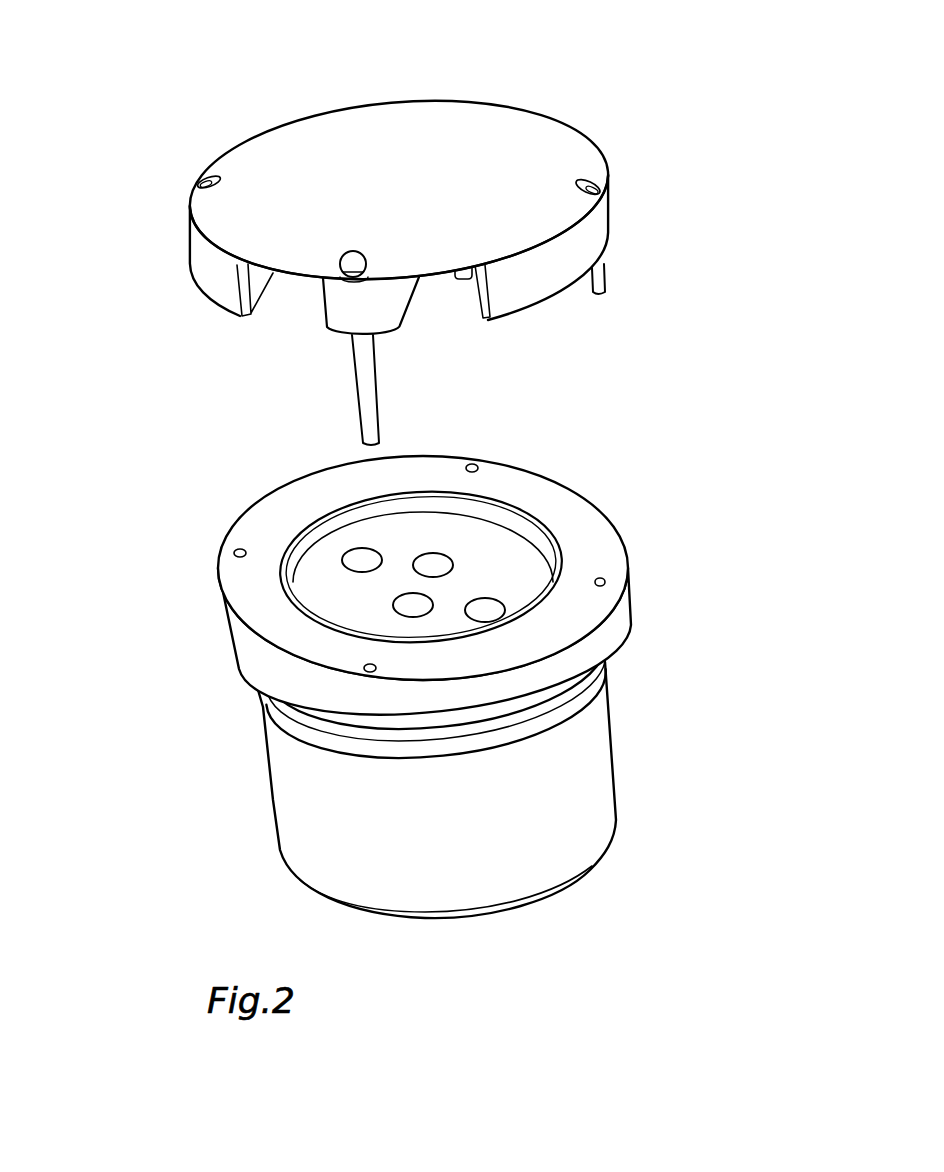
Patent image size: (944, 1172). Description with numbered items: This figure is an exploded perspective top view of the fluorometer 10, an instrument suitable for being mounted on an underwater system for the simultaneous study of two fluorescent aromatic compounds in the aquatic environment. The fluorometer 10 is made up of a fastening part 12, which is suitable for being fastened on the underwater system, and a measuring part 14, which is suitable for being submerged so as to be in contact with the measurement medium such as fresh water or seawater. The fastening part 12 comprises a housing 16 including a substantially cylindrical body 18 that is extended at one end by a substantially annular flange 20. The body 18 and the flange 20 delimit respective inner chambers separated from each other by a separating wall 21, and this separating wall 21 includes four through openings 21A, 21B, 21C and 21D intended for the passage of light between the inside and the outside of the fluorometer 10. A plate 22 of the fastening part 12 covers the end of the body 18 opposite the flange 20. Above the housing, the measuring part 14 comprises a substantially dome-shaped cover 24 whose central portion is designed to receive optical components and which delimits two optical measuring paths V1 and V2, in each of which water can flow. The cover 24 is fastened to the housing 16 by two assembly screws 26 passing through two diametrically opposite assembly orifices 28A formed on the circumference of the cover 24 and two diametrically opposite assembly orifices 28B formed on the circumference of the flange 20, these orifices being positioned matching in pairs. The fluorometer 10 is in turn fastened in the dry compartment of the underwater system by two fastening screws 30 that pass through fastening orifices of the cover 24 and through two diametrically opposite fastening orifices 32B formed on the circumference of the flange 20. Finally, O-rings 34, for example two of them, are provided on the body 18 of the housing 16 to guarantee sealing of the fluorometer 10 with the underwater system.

The fluorometer 10 is at (138, 101).
The fastening part 12 is at (250, 856).
The measuring part 14 is at (174, 288).
The housing 16 is at (175, 727).
The body 18 is at (590, 782).
The flange 20 is at (618, 604).
The separating wall 21 is at (347, 610).
The through opening 21A is at (440, 562).
The through opening 21B is at (418, 605).
The through opening 21C is at (357, 560).
The through opening 21D is at (487, 603).
The plate 22 is at (420, 922).
The cover 24 is at (412, 133).
The assembly screws 26 is at (607, 283).
The assembly orifices 28A is at (205, 185).
The assembly orifices 28B is at (238, 553).
The fastening screws 30 is at (363, 403).
The fastening orifices 32B is at (476, 462).
The O-rings 34 is at (398, 723).
The optical measuring path V1 is at (296, 316).
The optical measuring path V2 is at (444, 313).